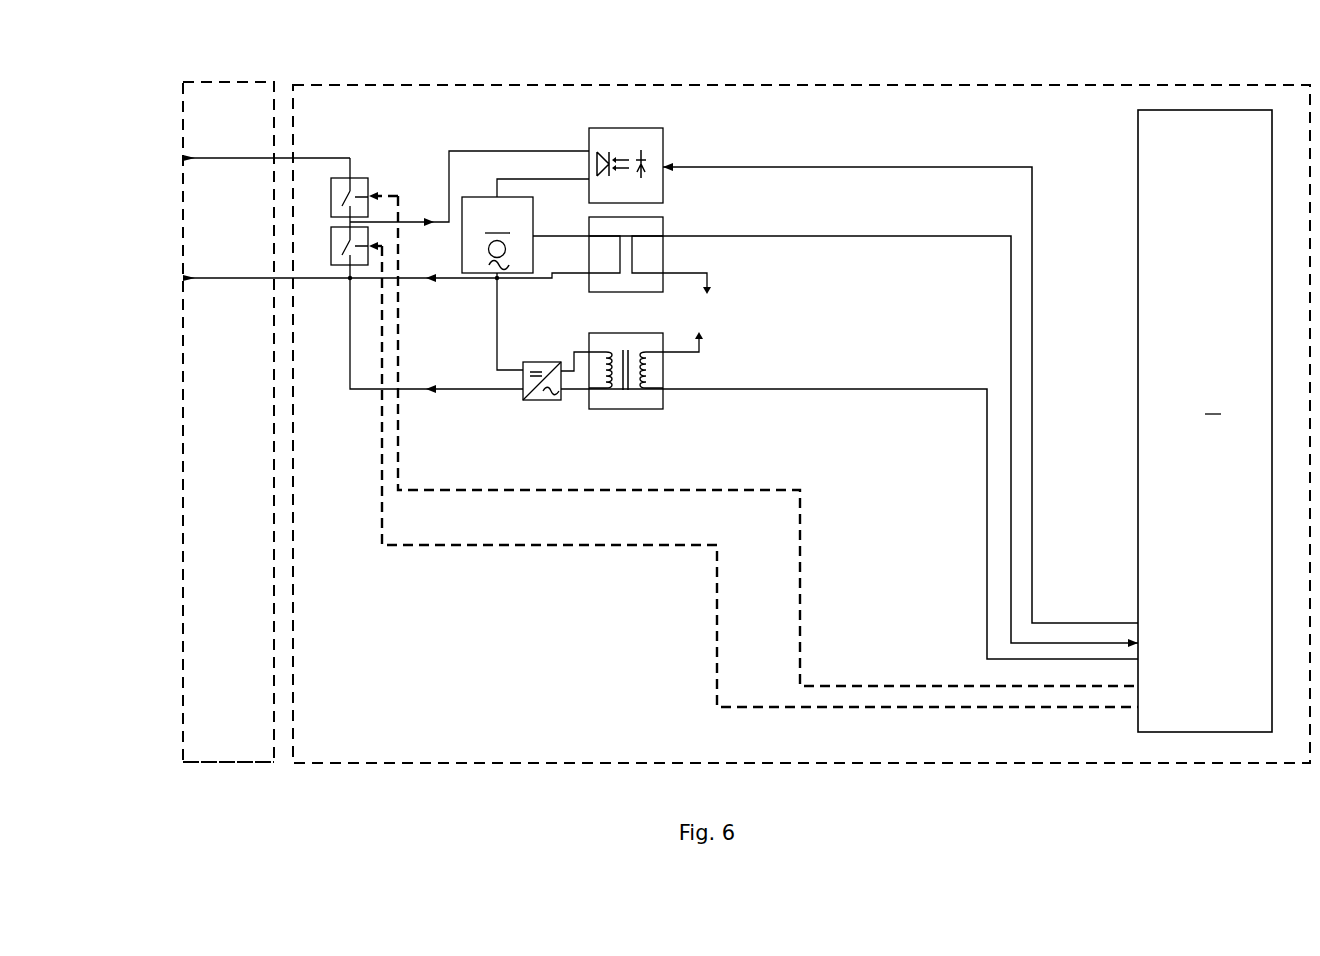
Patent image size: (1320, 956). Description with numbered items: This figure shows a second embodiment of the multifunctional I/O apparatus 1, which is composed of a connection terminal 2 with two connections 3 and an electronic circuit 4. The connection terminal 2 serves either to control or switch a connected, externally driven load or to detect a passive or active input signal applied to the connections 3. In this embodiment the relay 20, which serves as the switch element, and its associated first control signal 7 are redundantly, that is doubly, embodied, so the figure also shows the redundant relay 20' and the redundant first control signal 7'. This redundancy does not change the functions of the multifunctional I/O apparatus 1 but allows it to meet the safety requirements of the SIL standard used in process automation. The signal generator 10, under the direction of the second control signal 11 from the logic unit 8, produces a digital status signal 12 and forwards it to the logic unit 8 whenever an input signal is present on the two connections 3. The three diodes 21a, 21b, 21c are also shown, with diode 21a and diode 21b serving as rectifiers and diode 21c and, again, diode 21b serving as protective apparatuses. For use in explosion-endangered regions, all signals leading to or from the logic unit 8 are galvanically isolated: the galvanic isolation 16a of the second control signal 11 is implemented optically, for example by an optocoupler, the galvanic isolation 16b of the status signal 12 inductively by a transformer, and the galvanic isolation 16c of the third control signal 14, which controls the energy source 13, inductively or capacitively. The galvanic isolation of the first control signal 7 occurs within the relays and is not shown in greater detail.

The multifunctional I/O apparatus 1 is at (160, 742).
The connection terminal 2 is at (212, 83).
The connections 3 is at (187, 160).
The electronic circuit 4 is at (728, 86).
The first control signal 7 is at (753, 474).
The redundant first control signal 7' is at (753, 439).
The logic unit 8 is at (1205, 421).
The signal generator 10 is at (525, 274).
The second control signal 11 is at (855, 167).
The status signal 12 is at (855, 236).
The energy source 13 is at (534, 403).
The third control signal 14 is at (880, 389).
The galvanic isolation of the second control signal 16a is at (665, 152).
The galvanic isolation of the status signal 16b is at (665, 230).
The galvanic isolation of the third control signal 16c is at (665, 346).
The relay 20 is at (299, 249).
The redundant relay 20' is at (296, 190).
The diode 21a is at (430, 219).
The diode 21b is at (430, 283).
The diode 21c is at (430, 392).